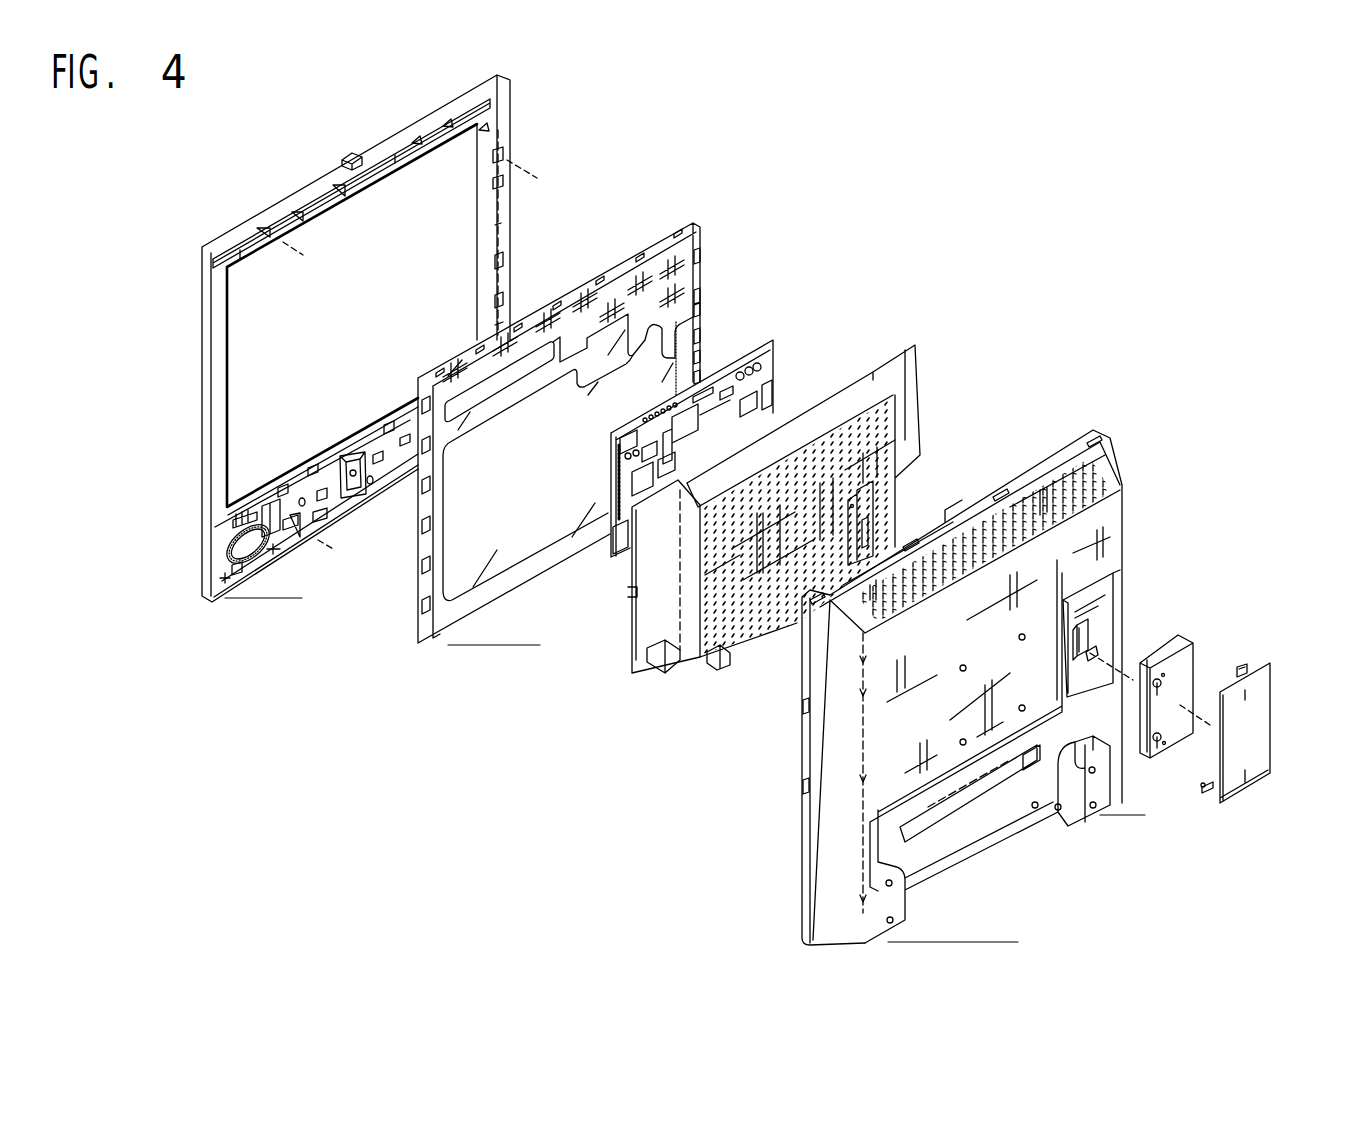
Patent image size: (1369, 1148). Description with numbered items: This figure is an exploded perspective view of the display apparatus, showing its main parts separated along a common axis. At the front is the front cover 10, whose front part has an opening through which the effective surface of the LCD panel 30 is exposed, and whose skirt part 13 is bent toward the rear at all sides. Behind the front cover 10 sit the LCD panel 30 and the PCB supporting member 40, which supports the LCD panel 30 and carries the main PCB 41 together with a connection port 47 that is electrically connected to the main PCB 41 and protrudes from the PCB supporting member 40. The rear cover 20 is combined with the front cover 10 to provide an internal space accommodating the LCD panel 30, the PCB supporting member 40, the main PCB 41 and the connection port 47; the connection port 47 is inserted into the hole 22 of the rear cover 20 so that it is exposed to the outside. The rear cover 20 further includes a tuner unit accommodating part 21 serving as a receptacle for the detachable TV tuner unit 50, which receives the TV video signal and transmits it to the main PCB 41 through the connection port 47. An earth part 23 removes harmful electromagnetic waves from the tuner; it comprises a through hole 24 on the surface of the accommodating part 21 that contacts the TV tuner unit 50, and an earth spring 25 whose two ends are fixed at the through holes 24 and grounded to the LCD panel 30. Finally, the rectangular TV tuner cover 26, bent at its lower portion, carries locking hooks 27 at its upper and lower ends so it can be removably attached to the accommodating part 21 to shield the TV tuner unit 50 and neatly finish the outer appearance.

The front cover 10 is at (506, 137).
The skirt part 13 is at (511, 221).
The rear cover 20 is at (1064, 455).
The tuner unit accommodating part 21 is at (1083, 603).
The hole 22 is at (1057, 653).
The earth part 23 is at (1175, 620).
The through hole 24 is at (1090, 653).
The earth spring 25 is at (1083, 637).
The TV tuner cover 26 is at (1267, 720).
The locking hooks 27 is at (1203, 795).
The LCD panel 30 is at (695, 233).
The PCB supporting member 40 is at (889, 357).
The main PCB 41 is at (763, 352).
The connection port 47 is at (858, 540).
The TV tuner unit 50 is at (1193, 657).